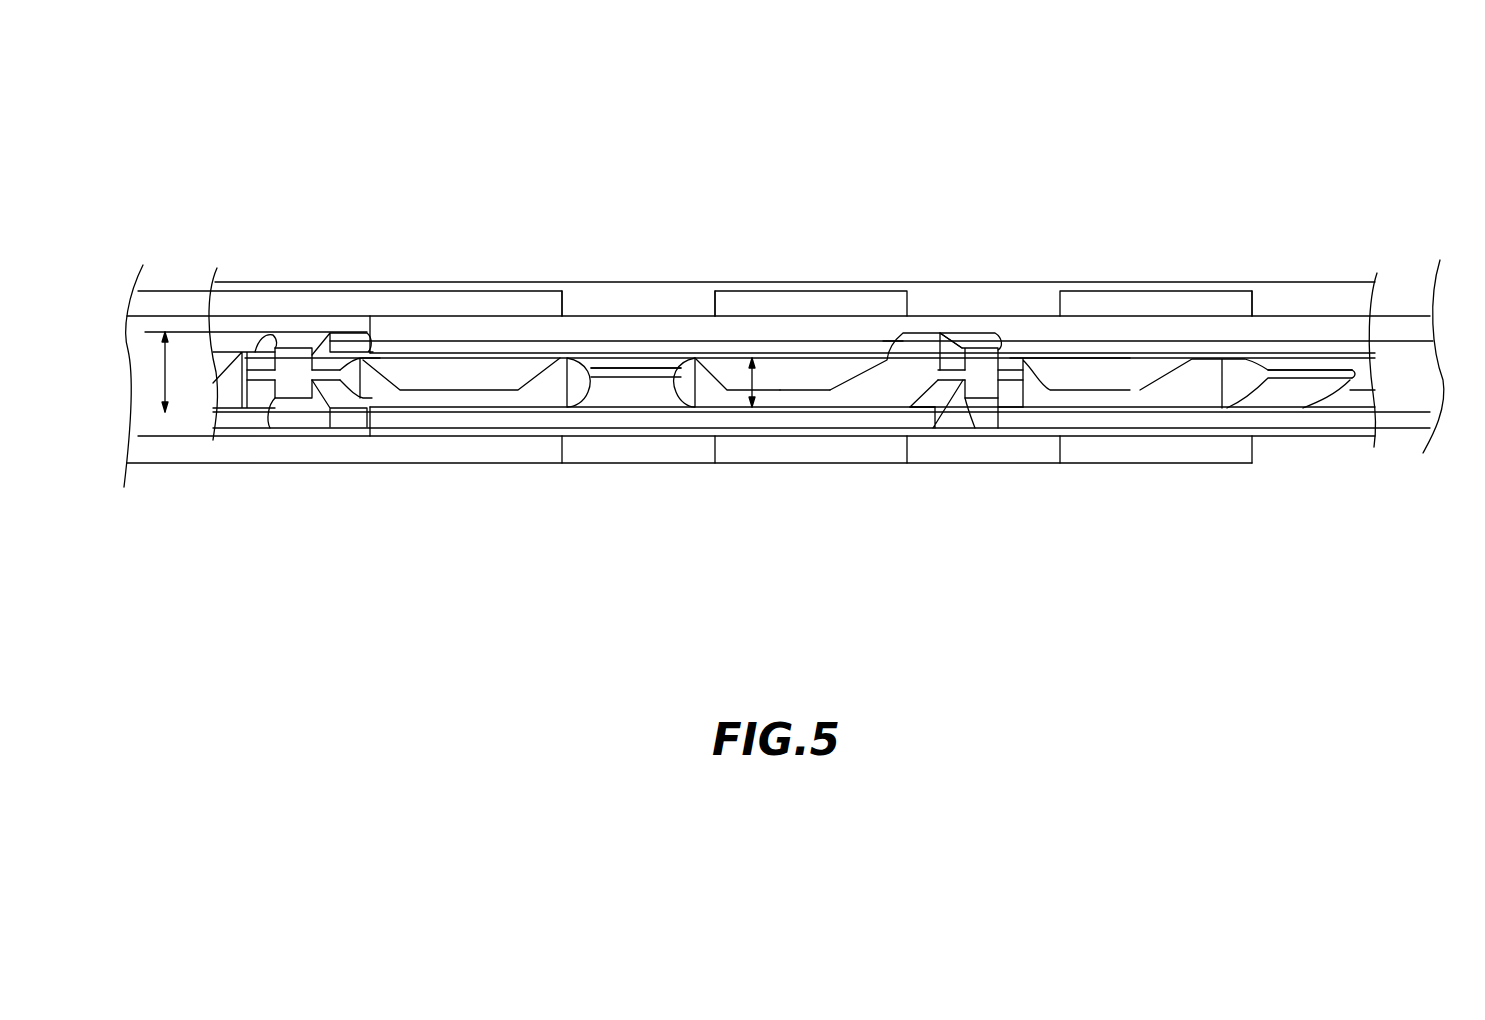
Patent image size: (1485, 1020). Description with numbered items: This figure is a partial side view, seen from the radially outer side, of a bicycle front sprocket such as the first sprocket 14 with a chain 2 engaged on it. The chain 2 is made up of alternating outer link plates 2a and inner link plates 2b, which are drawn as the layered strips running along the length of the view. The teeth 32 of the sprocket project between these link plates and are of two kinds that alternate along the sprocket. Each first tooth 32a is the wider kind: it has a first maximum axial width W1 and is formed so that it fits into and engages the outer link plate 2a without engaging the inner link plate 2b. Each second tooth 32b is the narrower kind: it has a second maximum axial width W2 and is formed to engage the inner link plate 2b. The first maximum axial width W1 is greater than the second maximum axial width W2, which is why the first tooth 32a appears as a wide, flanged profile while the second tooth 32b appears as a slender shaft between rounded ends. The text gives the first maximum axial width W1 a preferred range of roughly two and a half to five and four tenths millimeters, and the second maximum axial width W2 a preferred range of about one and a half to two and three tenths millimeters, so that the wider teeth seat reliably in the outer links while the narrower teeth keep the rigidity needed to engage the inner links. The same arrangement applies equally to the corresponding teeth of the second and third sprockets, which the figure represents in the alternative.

The chain 2 is at (800, 283).
The outer link plate 2a is at (265, 291).
The inner link plate 2b is at (613, 316).
The first sprocket 14 is at (873, 291).
The teeth 32 is at (320, 325).
The first tooth 32a is at (293, 417).
The second tooth 32b is at (633, 400).
The first maximum axial width W1 is at (167, 368).
The second maximum axial width W2 is at (762, 377).